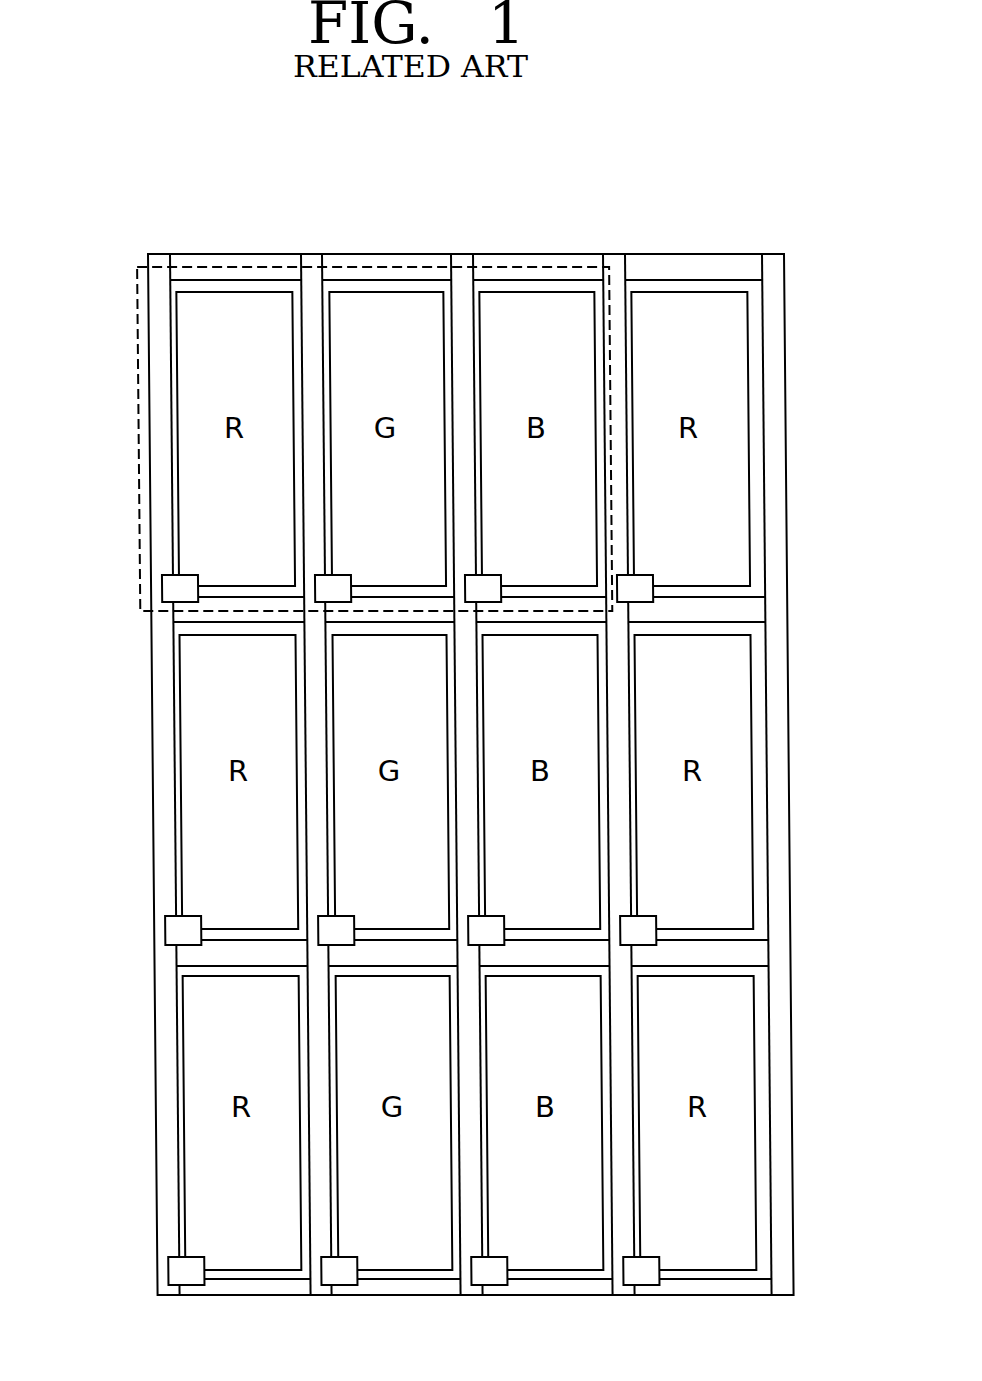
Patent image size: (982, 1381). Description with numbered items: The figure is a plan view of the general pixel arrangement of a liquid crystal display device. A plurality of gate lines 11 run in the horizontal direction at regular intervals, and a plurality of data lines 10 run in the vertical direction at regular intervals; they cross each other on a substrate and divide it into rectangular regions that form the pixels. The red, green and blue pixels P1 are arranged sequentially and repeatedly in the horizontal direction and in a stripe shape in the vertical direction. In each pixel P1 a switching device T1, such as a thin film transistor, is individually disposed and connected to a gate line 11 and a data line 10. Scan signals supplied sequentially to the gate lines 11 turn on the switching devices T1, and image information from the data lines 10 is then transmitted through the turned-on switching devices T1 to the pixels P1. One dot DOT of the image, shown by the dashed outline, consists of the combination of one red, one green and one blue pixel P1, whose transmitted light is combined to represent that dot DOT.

The pixel P1 is at (229, 292).
The dot DOT is at (377, 266).
The data line 10 is at (463, 280).
The gate line 11 is at (747, 608).
The switching device T1 is at (177, 587).